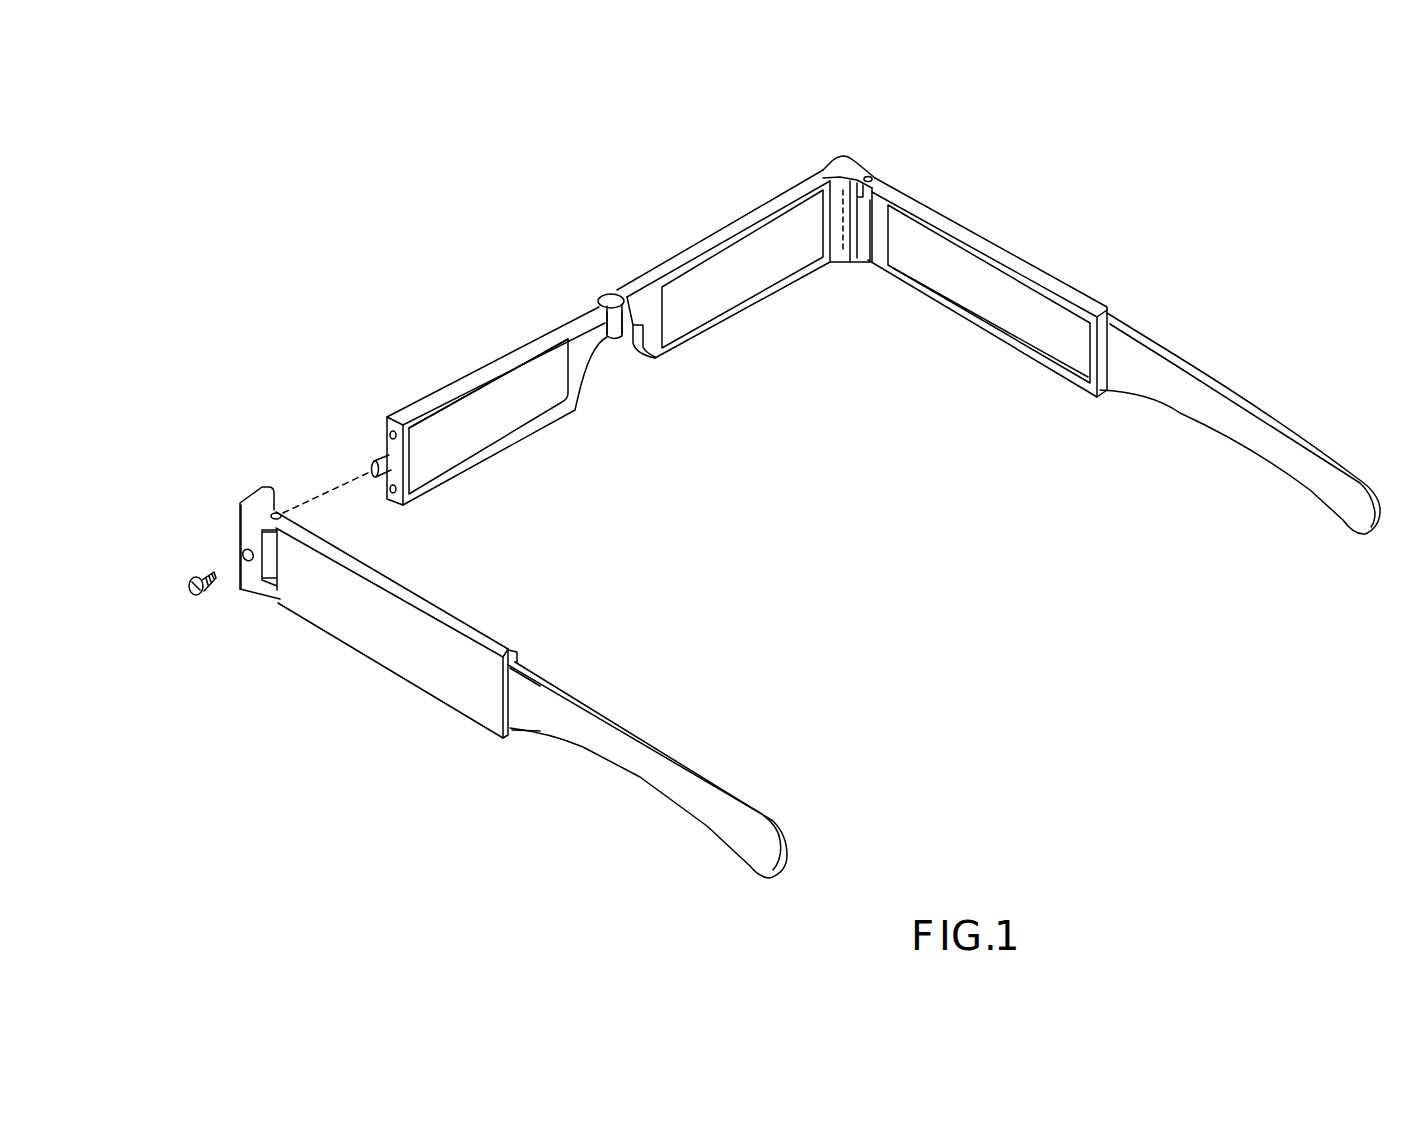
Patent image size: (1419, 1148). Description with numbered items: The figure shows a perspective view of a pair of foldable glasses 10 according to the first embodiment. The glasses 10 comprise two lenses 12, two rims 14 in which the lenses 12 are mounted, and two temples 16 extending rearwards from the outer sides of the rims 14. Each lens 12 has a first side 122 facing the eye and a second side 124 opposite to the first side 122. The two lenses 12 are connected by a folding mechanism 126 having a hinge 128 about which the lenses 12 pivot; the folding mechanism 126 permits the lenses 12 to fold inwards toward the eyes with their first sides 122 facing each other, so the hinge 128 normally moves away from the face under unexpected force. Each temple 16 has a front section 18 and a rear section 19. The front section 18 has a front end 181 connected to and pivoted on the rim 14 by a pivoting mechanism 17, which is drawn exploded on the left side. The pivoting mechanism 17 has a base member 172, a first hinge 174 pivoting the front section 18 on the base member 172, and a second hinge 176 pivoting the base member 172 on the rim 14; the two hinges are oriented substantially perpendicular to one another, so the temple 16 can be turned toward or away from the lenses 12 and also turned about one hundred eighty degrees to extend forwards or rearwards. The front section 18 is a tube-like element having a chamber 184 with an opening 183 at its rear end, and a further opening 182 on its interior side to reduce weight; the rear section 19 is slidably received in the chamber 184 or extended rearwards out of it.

The foldable glasses 10 is at (458, 187).
The lens 12 is at (543, 407).
The rim 14 is at (423, 398).
The temple 16 is at (1087, 292).
The pivoting mechanism 17 is at (836, 150).
The front section 18 is at (448, 677).
The rear section 19 is at (573, 737).
The first side 122 is at (498, 412).
The second side 124 is at (468, 357).
The folding mechanism 126 is at (603, 283).
The hinge 128 is at (617, 330).
The base member 172 is at (243, 523).
The first hinge 174 is at (283, 520).
The second hinge 176 is at (190, 595).
The front end 181 is at (270, 558).
The notch 182 is at (505, 643).
The opening 183 is at (510, 698).
The chamber 184 is at (984, 292).